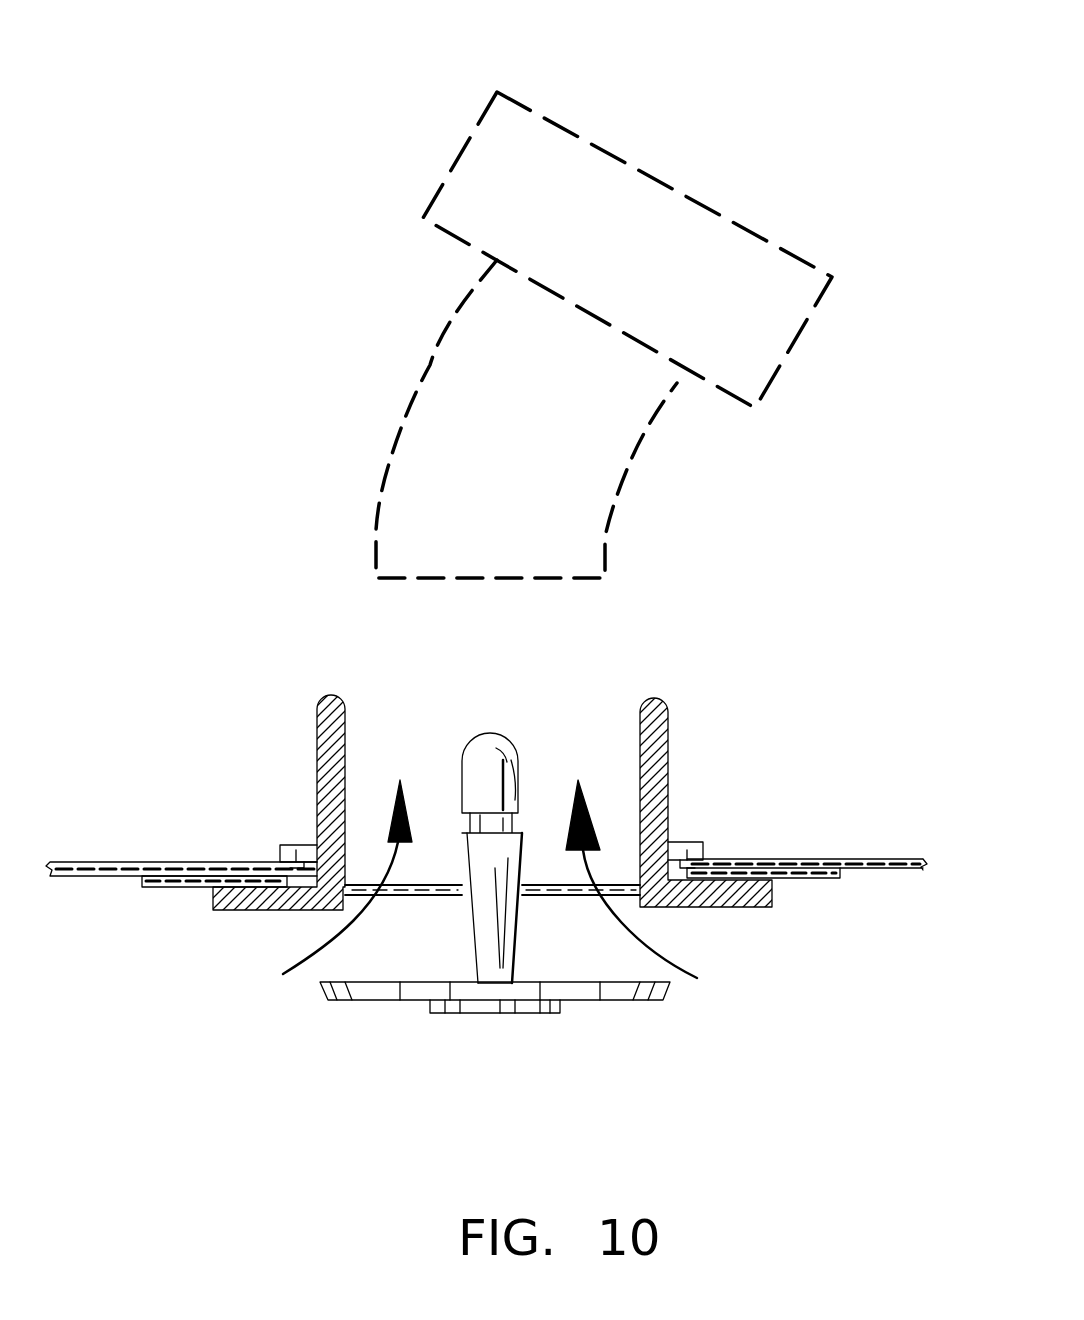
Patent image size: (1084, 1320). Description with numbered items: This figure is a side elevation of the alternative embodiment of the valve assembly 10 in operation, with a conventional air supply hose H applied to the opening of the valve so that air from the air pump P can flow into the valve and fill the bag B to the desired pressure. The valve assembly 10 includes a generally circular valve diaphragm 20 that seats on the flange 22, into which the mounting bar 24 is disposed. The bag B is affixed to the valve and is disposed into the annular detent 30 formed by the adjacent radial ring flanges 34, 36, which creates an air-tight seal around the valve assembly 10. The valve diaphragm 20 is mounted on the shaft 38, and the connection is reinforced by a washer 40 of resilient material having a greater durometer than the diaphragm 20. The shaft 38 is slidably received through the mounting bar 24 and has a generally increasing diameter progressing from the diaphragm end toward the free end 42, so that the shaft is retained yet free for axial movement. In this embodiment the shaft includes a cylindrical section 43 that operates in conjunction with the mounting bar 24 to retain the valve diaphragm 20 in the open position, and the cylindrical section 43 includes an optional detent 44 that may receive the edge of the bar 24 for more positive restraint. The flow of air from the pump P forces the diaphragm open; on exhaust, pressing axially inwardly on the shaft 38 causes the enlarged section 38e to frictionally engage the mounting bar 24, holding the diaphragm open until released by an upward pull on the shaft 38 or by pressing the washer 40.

The valve assembly 10 is at (703, 697).
The valve diaphragm 20 is at (541, 1037).
The flange 22 is at (777, 897).
The mounting bar 24 is at (565, 897).
The annular detent 30 is at (282, 860).
The radial ring flange 34 is at (173, 890).
The radial ring flange 36 is at (293, 843).
The shaft 38 is at (577, 751).
The enlarged section 38e is at (522, 862).
The washer 40 is at (438, 1015).
The free end 42 is at (505, 725).
The cylindrical section 43 is at (460, 830).
The detent 44 is at (519, 765).
The bag B is at (807, 860).
The air supply hose H is at (417, 380).
The air pump P is at (647, 173).